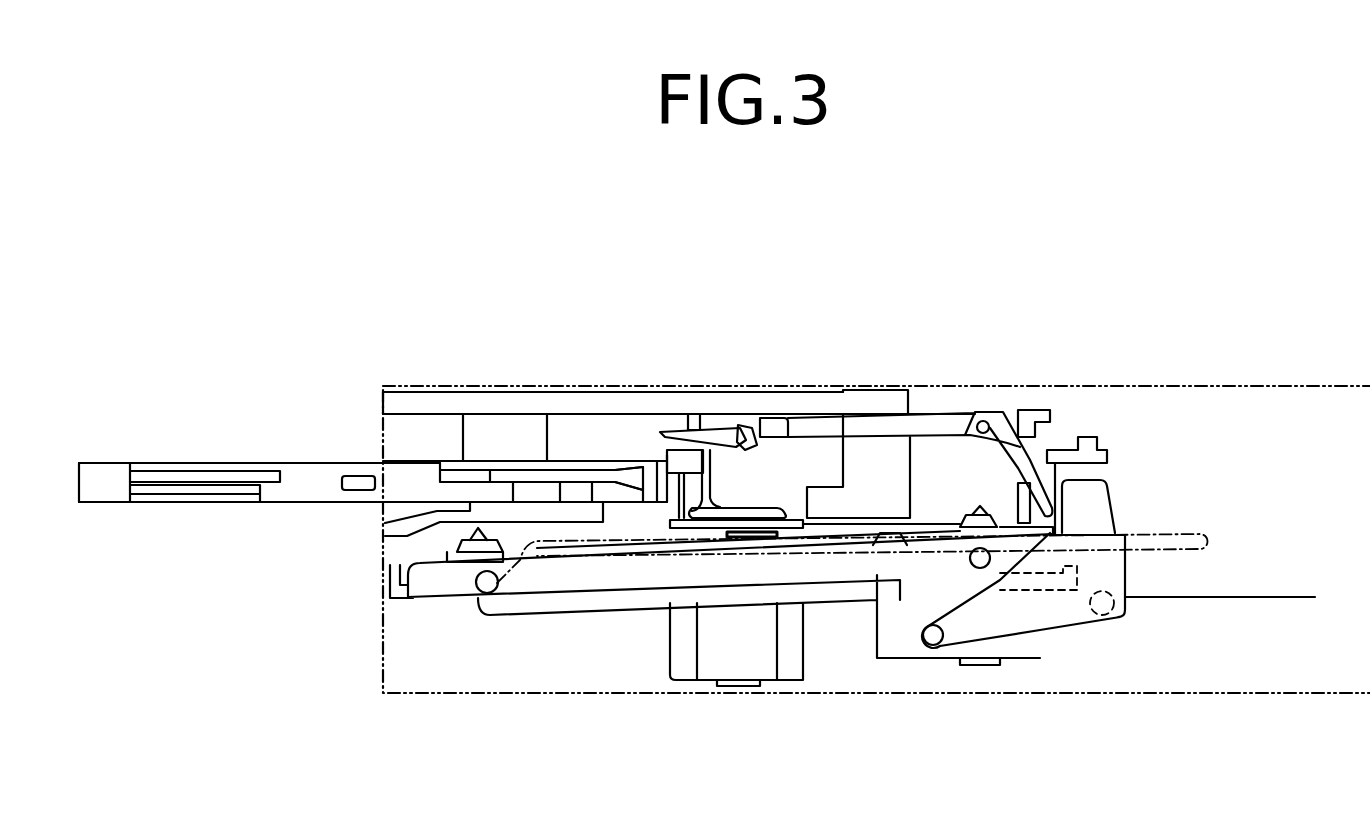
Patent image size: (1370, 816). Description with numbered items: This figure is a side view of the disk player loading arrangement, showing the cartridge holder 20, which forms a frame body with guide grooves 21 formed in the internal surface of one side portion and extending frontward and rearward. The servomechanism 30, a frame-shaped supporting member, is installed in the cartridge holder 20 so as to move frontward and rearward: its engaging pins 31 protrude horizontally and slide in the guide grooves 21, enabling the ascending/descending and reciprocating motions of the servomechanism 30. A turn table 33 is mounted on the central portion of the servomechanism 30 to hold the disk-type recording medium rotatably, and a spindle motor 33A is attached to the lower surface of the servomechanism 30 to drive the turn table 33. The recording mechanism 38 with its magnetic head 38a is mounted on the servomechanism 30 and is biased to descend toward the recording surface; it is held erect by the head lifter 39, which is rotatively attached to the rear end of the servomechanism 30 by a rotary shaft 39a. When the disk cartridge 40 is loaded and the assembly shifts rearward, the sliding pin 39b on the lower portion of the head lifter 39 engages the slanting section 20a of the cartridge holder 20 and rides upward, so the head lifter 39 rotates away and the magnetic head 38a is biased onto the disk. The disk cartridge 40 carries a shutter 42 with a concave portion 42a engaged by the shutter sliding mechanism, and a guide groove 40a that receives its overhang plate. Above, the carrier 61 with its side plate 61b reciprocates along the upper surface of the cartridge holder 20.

The cartridge holder 20 is at (1302, 380).
The slanting section 20a is at (1290, 655).
The guide grooves 21 is at (598, 553).
The servomechanism 30 is at (433, 580).
The engaging pins 31 is at (497, 593).
The turn table 33 is at (718, 507).
The spindle motor 33A is at (712, 655).
The recording mechanism 38 is at (1088, 420).
The magnetic head 38a is at (716, 432).
The head lifter 39 is at (1105, 575).
The rotary shaft 39a is at (1108, 598).
The sliding pin 39b is at (928, 645).
The disk cartridge 40 is at (100, 470).
The guide groove 40a is at (578, 470).
The shutter 42 is at (312, 462).
The concave portion 42a is at (358, 493).
The carrier 61 is at (446, 378).
The side plate 61b is at (643, 390).